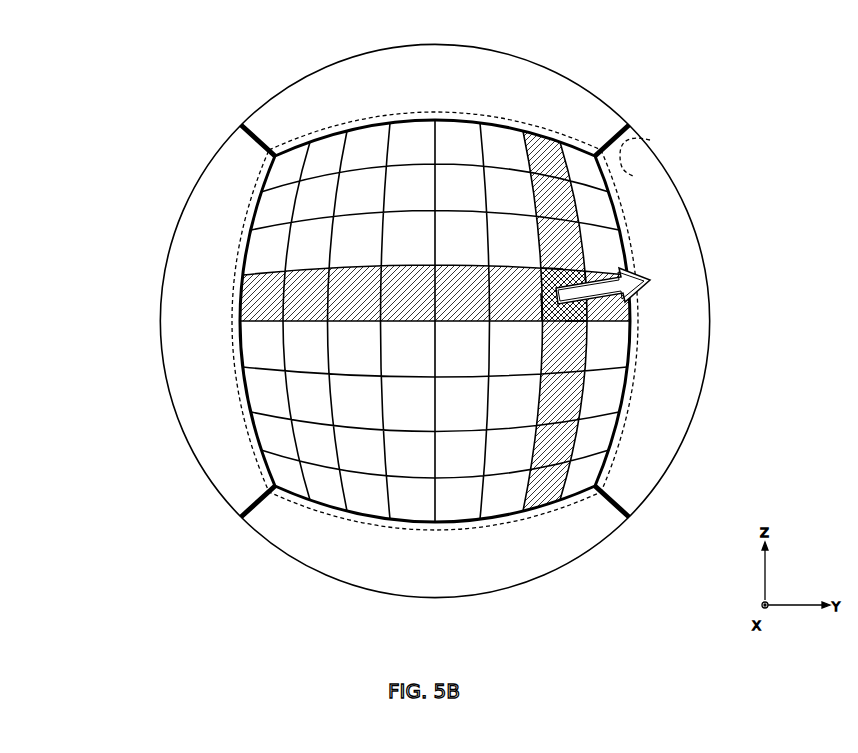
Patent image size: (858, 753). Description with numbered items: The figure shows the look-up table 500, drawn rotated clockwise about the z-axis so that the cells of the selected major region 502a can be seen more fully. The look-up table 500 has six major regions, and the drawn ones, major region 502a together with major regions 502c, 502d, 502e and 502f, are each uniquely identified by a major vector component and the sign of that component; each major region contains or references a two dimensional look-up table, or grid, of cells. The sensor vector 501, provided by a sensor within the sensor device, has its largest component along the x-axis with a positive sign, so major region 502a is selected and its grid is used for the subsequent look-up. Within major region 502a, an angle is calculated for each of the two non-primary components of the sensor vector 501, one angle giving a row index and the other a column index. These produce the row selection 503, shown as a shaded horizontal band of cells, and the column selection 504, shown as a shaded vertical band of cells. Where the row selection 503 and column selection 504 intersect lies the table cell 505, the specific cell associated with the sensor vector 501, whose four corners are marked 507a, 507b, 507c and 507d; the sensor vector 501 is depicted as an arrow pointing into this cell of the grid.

The look-up table 500 is at (173, 92).
The sensor vector 501 is at (646, 282).
The major region 502a is at (657, 152).
The major region 502c is at (419, 46).
The major region 502d is at (304, 548).
The major region 502e is at (178, 384).
The major region 502f is at (658, 210).
The row selection 503 is at (248, 295).
The column selection 504 is at (545, 146).
The table cell 505 is at (577, 311).
The cell corner 507a is at (541, 268).
The cell corner 507b is at (588, 272).
The cell corner 507c is at (589, 322).
The cell corner 507d is at (540, 321).